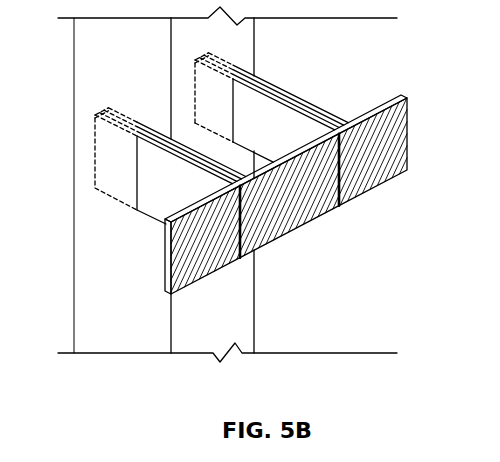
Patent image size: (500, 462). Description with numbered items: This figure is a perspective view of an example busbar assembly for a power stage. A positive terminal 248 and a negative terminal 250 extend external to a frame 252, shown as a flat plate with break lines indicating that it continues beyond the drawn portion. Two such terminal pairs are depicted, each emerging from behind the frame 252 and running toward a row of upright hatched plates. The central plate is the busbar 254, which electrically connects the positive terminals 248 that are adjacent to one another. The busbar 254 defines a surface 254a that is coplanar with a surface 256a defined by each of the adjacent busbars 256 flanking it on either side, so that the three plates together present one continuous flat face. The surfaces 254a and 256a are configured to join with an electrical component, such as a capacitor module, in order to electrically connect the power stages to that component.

The positive terminal 248 is at (158, 135).
The negative terminal 250 is at (163, 188).
The frame 252 is at (98, 78).
The busbar 254 is at (302, 200).
The surface 254a is at (278, 228).
The adjacent busbar 256 is at (270, 194).
The surface 256a is at (190, 272).